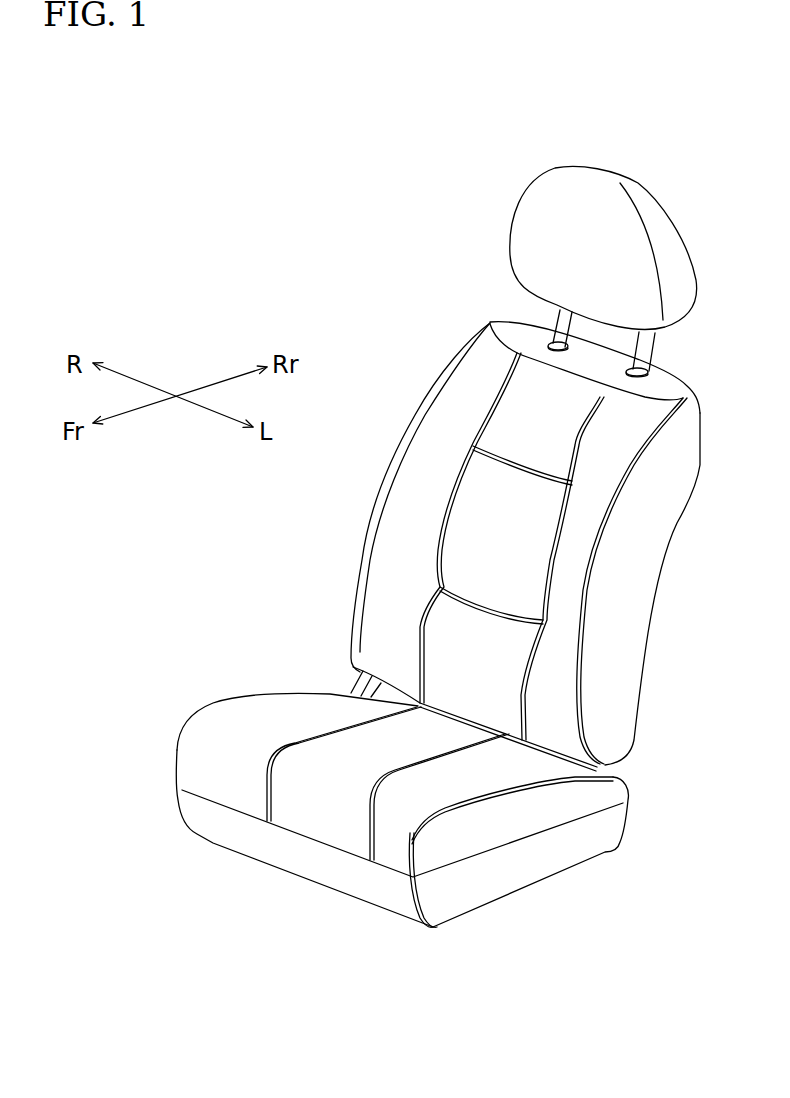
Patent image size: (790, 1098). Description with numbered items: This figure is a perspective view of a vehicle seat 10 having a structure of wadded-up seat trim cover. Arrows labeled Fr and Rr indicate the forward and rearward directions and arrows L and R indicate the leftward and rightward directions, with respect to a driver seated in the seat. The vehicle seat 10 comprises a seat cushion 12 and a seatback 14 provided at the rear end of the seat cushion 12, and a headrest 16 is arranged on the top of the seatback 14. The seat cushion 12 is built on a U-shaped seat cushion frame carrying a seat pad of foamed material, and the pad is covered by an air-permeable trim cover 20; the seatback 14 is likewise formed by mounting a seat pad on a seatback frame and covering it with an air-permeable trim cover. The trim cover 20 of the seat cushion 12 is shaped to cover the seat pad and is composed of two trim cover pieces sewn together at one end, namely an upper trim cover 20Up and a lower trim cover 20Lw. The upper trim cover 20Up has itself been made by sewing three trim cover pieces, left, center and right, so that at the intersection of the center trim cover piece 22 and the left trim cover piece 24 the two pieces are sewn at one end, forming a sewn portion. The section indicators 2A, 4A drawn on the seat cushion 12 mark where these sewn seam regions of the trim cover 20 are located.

The vehicle seat 10 is at (362, 293).
The seat cushion 12 is at (207, 677).
The seatback 14 is at (388, 407).
The headrest 16 is at (507, 210).
The trim cover 20 is at (203, 723).
The upper trim cover 20Up is at (315, 707).
The lower trim cover 20Lw is at (215, 835).
The center trim cover piece 22 is at (312, 830).
The left trim cover piece 24 is at (393, 857).
The section line of FIG. 2A is at (340, 767).
The section line of FIG. 4A is at (418, 800).